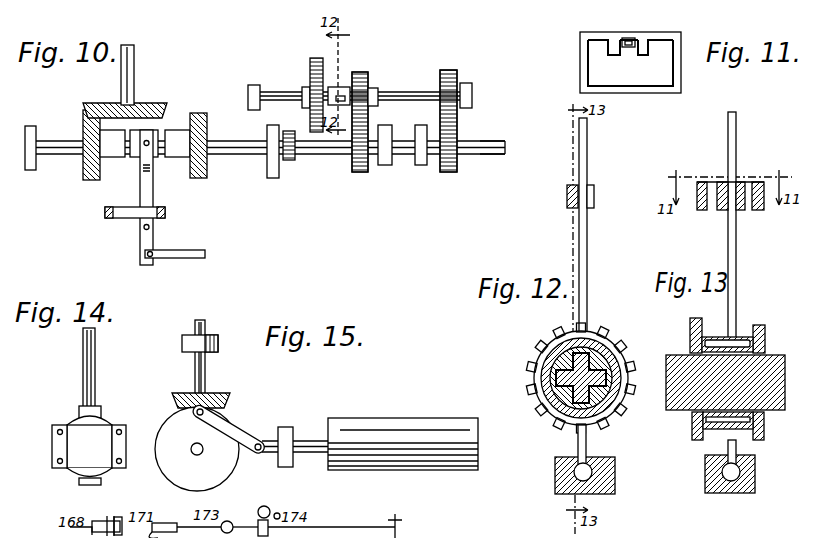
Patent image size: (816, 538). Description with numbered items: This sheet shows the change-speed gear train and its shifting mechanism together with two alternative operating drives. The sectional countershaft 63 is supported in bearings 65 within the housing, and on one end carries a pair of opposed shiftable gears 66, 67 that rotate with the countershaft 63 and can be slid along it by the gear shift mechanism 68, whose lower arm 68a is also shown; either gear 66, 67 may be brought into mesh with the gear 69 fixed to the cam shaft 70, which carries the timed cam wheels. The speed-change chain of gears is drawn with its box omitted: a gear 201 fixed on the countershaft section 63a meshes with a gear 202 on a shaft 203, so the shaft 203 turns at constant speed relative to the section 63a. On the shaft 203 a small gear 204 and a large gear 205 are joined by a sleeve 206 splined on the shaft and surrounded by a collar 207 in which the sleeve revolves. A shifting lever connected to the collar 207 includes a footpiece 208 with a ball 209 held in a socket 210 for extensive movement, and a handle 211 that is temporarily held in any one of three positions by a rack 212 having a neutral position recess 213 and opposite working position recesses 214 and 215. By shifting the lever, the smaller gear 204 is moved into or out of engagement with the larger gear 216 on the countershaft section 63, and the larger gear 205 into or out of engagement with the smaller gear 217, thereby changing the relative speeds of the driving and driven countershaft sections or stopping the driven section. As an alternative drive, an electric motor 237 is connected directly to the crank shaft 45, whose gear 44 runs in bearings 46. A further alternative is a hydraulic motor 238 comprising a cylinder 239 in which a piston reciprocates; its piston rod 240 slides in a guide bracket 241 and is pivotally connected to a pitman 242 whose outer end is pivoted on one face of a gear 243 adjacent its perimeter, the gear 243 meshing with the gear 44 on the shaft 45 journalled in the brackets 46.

In FIG. 10, the sectional countershaft 63 is at (248, 142).
In FIG. 10, the countershaft section 63a is at (490, 140).
In FIG. 10, the bearings 65 is at (268, 160).
In FIG. 10, the shiftable gear 66 is at (199, 113).
In FIG. 10, the shiftable gear 67 is at (83, 118).
In FIG. 10, the gear shift mechanism 68 is at (140, 235).
In FIG. 10, the bracket arm 68a is at (186, 258).
In FIG. 10, the gear 69 is at (103, 103).
In FIG. 10, the cam shaft 70 is at (134, 75).
In FIG. 10, the gear 201 is at (447, 172).
In FIG. 10, the gear 202 is at (441, 88).
In FIG. 10, the shaft 203 is at (305, 87).
In FIG. 12, the shaft 203 is at (556, 382).
In FIG. 13, the shaft 203 is at (680, 347).
In FIG. 10, the small gear 204 is at (357, 72).
In FIG. 13, the small gear 204 is at (754, 330).
In FIG. 10, the large gear 205 is at (313, 58).
In FIG. 12, the large gear 205 is at (535, 352).
In FIG. 13, the large gear 205 is at (691, 322).
In FIG. 12, the sleeve 206 is at (555, 410).
In FIG. 13, the sleeve 206 is at (692, 430).
In FIG. 10, the collar 207 is at (345, 78).
In FIG. 12, the collar 207 is at (551, 380).
In FIG. 13, the collar 207 is at (736, 338).
In FIG. 12, the footpiece 208 is at (578, 452).
In FIG. 13, the footpiece 208 is at (727, 452).
In FIG. 12, the ball 209 is at (576, 477).
In FIG. 13, the ball 209 is at (723, 476).
In FIG. 12, the socket 210 is at (615, 492).
In FIG. 13, the socket 210 is at (748, 494).
In FIG. 10, the handle 211 is at (371, 100).
In FIG. 11, the handle 211 is at (635, 38).
In FIG. 12, the handle 211 is at (580, 233).
In FIG. 13, the handle 211 is at (729, 230).
In FIG. 11, the rack 212 is at (584, 77).
In FIG. 12, the rack 212 is at (567, 196).
In FIG. 13, the rack 212 is at (697, 193).
In FIG. 11, the neutral position recess 213 is at (636, 55).
In FIG. 12, the neutral position recess 213 is at (594, 195).
In FIG. 13, the neutral position recess 213 is at (729, 181).
In FIG. 11, the working position recess 214 is at (590, 47).
In FIG. 13, the working position recess 214 is at (700, 182).
In FIG. 11, the working position recess 215 is at (662, 48).
In FIG. 13, the working position recess 215 is at (746, 186).
In FIG. 10, the larger gear 216 is at (355, 172).
In FIG. 10, the smaller gear 217 is at (289, 131).
In FIG. 15, the gear 44 is at (177, 400).
In FIG. 14, the crank shaft 45 is at (87, 362).
In FIG. 15, the crank shaft 45 is at (197, 326).
In FIG. 15, the bearings 46 is at (183, 344).
In FIG. 14, the electric motor 237 is at (70, 448).
In FIG. 15, the hydraulic motor 238 is at (370, 410).
In FIG. 15, the cylinder 239 is at (430, 409).
In FIG. 15, the piston rod 240 is at (312, 441).
In FIG. 15, the guide bracket 241 is at (286, 467).
In FIG. 15, the pitman 242 is at (242, 453).
In FIG. 15, the gear 243 is at (183, 478).